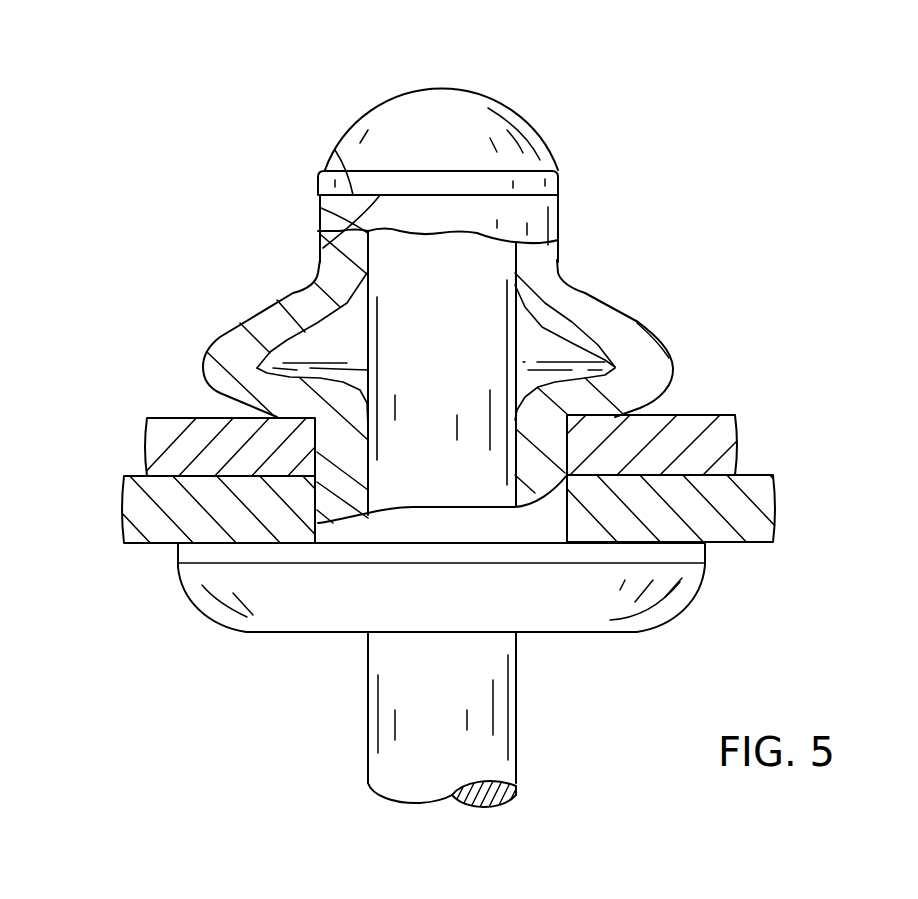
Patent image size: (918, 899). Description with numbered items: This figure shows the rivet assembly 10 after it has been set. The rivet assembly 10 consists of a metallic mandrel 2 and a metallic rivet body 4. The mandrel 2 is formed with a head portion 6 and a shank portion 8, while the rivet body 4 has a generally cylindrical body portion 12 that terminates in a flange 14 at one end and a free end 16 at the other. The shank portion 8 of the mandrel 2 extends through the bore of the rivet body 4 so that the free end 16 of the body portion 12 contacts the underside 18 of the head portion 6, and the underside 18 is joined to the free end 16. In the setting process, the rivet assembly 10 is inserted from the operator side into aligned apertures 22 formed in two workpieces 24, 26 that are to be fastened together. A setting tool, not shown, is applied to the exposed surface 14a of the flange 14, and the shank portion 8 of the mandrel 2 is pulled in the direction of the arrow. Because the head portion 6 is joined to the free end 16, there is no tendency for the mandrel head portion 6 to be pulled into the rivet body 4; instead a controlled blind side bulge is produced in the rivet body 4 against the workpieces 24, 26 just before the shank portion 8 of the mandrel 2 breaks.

The mandrel 2 is at (421, 176).
The rivet body 4 is at (520, 441).
The head portion 6 is at (378, 133).
The shank portion 8 is at (472, 547).
The rivet assembly 10 is at (461, 446).
The body portion 12 is at (558, 227).
The flange 14 is at (520, 597).
The exposed surface 14a is at (653, 596).
The free end 16 is at (338, 176).
The underside 18 is at (318, 231).
The aligned apertures 22 is at (563, 558).
The workpiece 24 is at (175, 430).
The workpiece 26 is at (170, 513).